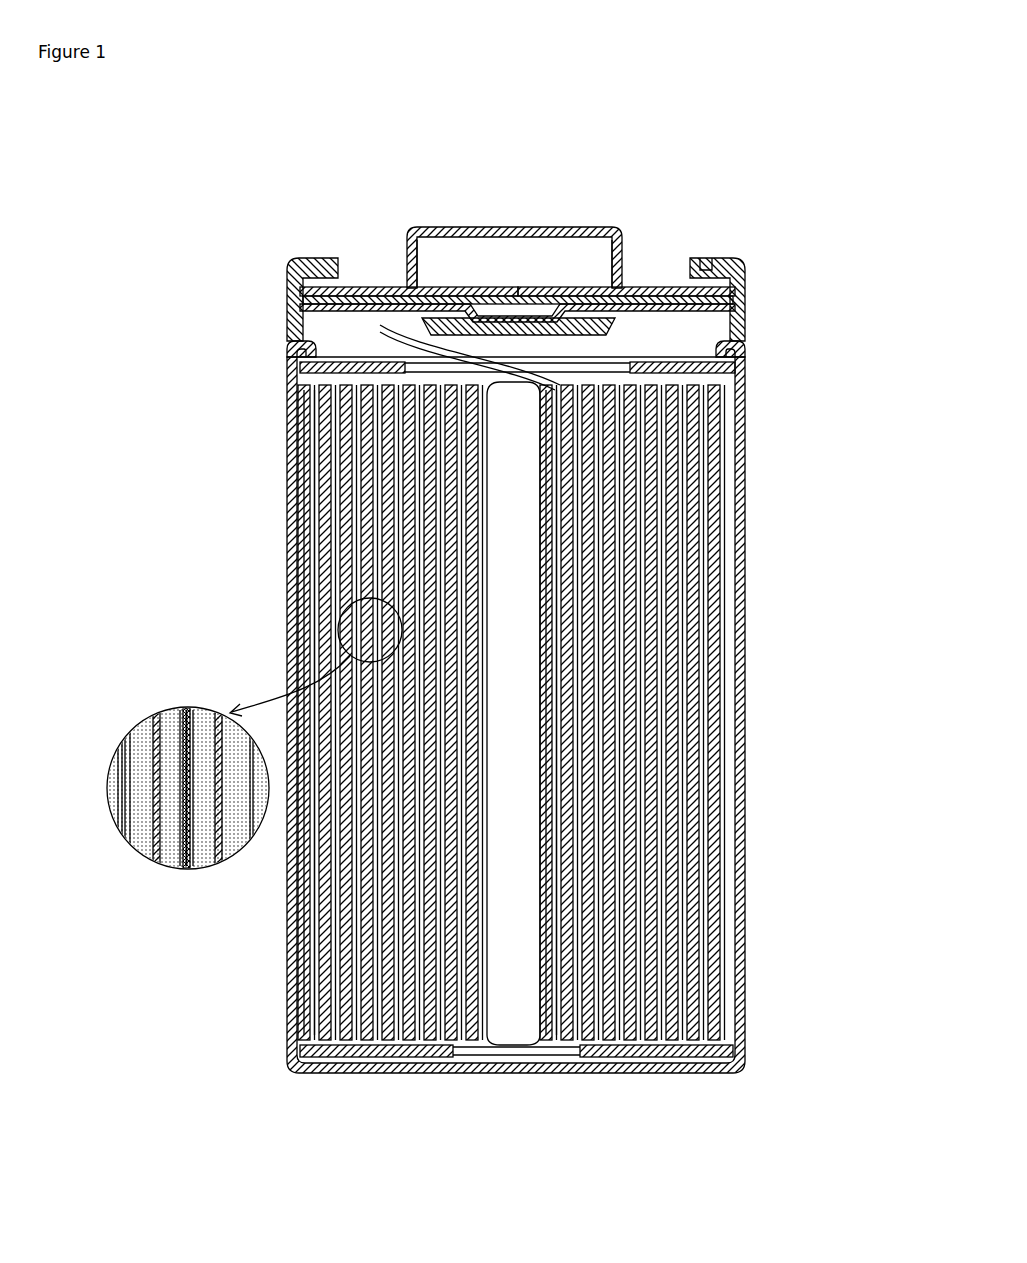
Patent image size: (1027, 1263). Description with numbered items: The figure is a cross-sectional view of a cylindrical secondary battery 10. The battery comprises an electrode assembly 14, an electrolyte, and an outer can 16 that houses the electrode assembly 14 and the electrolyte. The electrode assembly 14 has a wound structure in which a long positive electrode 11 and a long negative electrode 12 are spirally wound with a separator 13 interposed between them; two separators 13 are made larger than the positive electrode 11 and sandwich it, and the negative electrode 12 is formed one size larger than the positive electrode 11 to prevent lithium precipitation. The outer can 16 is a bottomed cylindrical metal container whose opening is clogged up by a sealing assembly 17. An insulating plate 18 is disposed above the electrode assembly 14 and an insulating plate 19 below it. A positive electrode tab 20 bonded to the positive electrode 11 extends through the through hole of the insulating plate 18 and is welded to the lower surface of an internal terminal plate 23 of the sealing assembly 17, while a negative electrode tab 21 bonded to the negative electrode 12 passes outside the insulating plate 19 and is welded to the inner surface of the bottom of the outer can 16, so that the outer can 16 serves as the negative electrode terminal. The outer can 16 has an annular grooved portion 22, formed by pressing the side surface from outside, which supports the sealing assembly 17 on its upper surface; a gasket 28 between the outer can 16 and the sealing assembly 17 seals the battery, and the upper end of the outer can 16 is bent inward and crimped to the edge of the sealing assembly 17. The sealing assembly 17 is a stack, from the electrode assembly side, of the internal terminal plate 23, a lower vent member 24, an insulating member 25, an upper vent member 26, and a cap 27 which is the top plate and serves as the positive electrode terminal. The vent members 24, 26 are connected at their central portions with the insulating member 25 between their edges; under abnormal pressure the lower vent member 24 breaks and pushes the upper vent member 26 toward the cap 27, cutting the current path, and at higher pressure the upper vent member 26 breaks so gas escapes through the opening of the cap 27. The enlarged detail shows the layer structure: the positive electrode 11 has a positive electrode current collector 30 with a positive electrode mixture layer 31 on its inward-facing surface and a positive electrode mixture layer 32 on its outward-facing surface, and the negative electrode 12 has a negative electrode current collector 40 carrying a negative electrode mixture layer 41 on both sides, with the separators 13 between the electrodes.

The secondary battery 10 is at (759, 131).
The positive electrode 11 is at (742, 770).
The negative electrode 12 is at (742, 798).
The separator 13 is at (742, 826).
The electrode assembly 14 is at (477, 712).
The outer can 16 is at (748, 448).
The sealing assembly 17 is at (668, 286).
The insulating plate 18 is at (746, 366).
The insulating plate 19 is at (746, 1053).
The positive electrode tab 20 is at (450, 348).
The negative electrode tab 21 is at (300, 1050).
The grooved portion 22 is at (300, 350).
The internal terminal plate 23 is at (575, 296).
The lower vent member 24 is at (425, 290).
The insulating member 25 is at (365, 286).
The upper vent member 26 is at (445, 300).
The cap 27 is at (575, 228).
The gasket 28 is at (746, 283).
The positive electrode current collector 30 is at (187, 710).
The positive electrode mixture layer 31 is at (200, 712).
The positive electrode mixture layer 32 is at (178, 712).
The negative electrode current collector 40 is at (122, 760).
The negative electrode mixture layer 41 is at (140, 720).